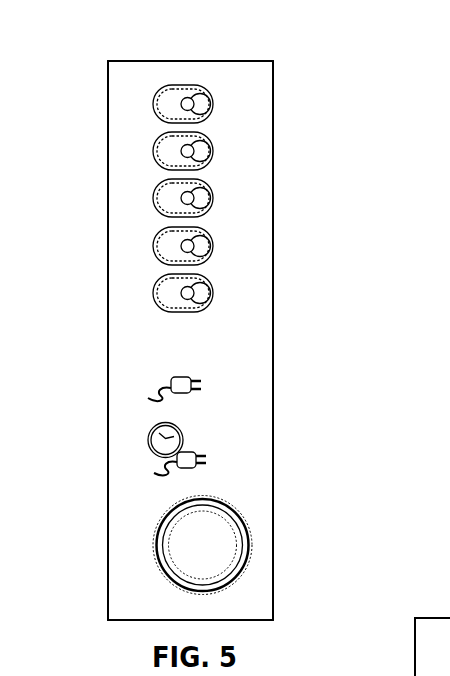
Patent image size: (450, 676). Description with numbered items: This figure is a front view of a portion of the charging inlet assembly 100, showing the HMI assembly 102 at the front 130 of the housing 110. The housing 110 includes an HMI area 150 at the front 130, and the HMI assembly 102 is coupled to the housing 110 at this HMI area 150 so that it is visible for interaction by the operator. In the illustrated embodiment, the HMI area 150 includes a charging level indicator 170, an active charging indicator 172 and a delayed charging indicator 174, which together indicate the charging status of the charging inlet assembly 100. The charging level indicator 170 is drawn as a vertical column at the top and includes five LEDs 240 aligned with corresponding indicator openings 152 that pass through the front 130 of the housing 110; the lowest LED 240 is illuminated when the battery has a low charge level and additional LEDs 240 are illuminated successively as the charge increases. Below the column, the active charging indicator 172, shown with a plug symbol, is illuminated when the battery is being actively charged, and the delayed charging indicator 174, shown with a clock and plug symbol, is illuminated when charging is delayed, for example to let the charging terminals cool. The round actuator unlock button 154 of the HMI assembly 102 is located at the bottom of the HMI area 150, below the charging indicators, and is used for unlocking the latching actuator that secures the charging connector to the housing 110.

The charging inlet assembly 100 is at (355, 81).
The HMI area 150 is at (256, 167).
The front 130 is at (258, 340).
The housing 110 is at (135, 353).
The charging level indicator 170 is at (224, 90).
The indicator openings 152 is at (148, 150).
The HMI assembly 102 is at (148, 198).
The LEDs 240 is at (163, 252).
The active charging indicator 172 is at (143, 391).
The delayed charging indicator 174 is at (143, 458).
The actuator unlock button 154 is at (195, 552).